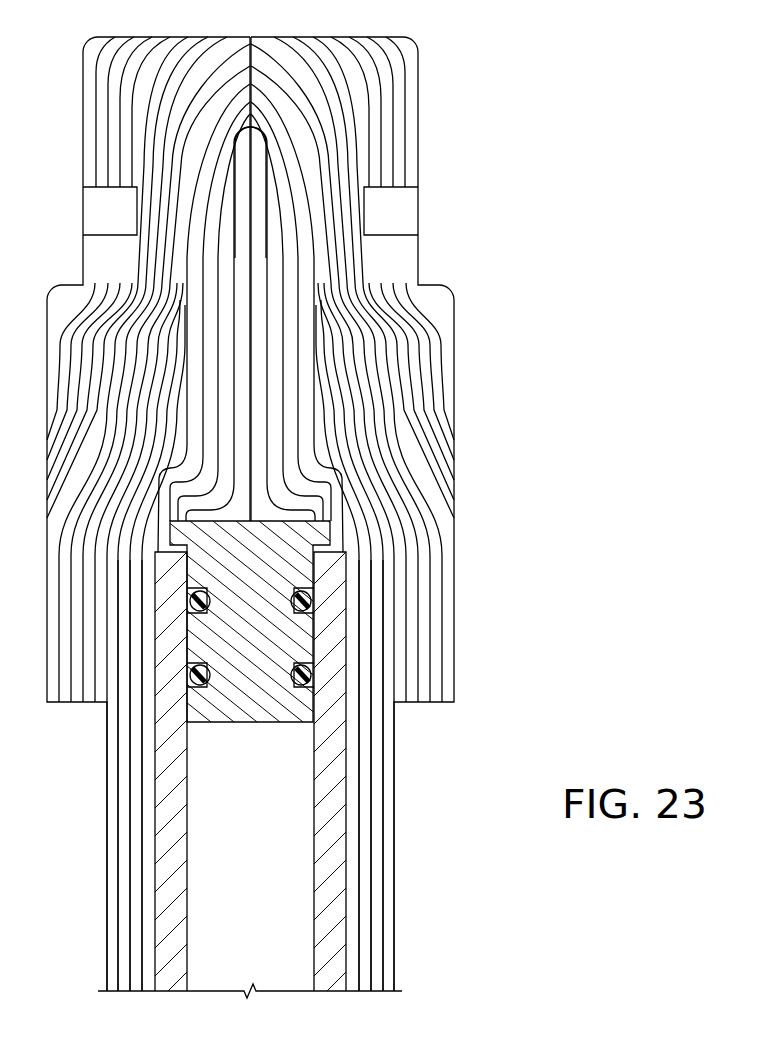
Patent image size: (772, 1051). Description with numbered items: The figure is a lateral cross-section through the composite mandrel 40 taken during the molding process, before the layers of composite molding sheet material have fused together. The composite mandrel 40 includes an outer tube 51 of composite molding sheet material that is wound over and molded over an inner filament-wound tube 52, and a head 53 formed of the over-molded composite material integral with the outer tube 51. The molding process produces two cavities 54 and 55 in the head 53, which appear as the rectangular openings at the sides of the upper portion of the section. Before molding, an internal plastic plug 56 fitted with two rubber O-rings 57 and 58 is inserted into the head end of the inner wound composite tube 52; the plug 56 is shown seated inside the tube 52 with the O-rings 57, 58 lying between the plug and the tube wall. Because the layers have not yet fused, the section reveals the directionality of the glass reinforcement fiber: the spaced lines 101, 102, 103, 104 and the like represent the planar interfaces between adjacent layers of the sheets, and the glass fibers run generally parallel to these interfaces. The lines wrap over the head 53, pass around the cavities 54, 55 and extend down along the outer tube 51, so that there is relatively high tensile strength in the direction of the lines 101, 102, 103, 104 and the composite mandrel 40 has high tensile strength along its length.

The composite mandrel 40 is at (534, 167).
The outer tube 51 is at (378, 797).
The inner filament-wound tube 52 is at (330, 879).
The head 53 is at (454, 381).
The cavity 54 is at (110, 207).
The cavity 55 is at (390, 208).
The internal plastic plug 56 is at (322, 532).
The rubber O-ring 57 is at (305, 600).
The rubber O-ring 58 is at (305, 676).
The spaced line 101 is at (418, 63).
The spaced line 102 is at (407, 88).
The spaced line 103 is at (394, 115).
The spaced line 104 is at (383, 143).